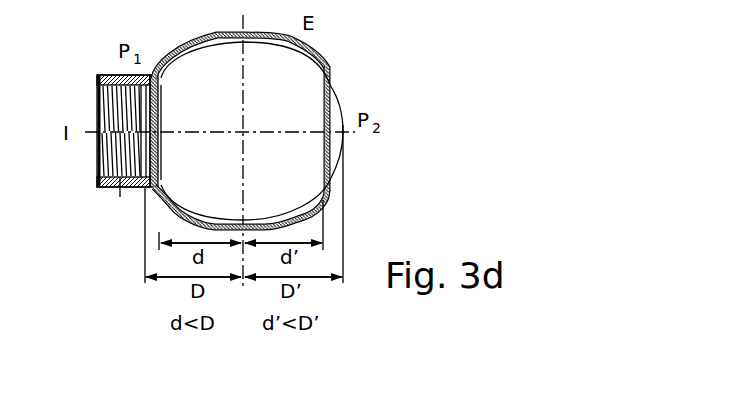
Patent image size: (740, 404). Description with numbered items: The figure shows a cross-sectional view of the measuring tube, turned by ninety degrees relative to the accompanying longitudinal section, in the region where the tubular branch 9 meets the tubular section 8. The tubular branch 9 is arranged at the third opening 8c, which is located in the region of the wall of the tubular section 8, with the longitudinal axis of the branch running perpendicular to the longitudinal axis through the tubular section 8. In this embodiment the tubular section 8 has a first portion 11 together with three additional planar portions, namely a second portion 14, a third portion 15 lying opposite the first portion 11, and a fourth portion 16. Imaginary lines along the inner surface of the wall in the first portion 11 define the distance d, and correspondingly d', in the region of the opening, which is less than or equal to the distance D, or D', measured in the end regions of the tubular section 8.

The tubular section 8 is at (338, 183).
The third opening 8c is at (168, 157).
The tubular branch 9 is at (102, 195).
The first portion 11 is at (171, 131).
The second portion 14 is at (240, 56).
The third portion 15 is at (308, 128).
The fourth portion 16 is at (240, 207).